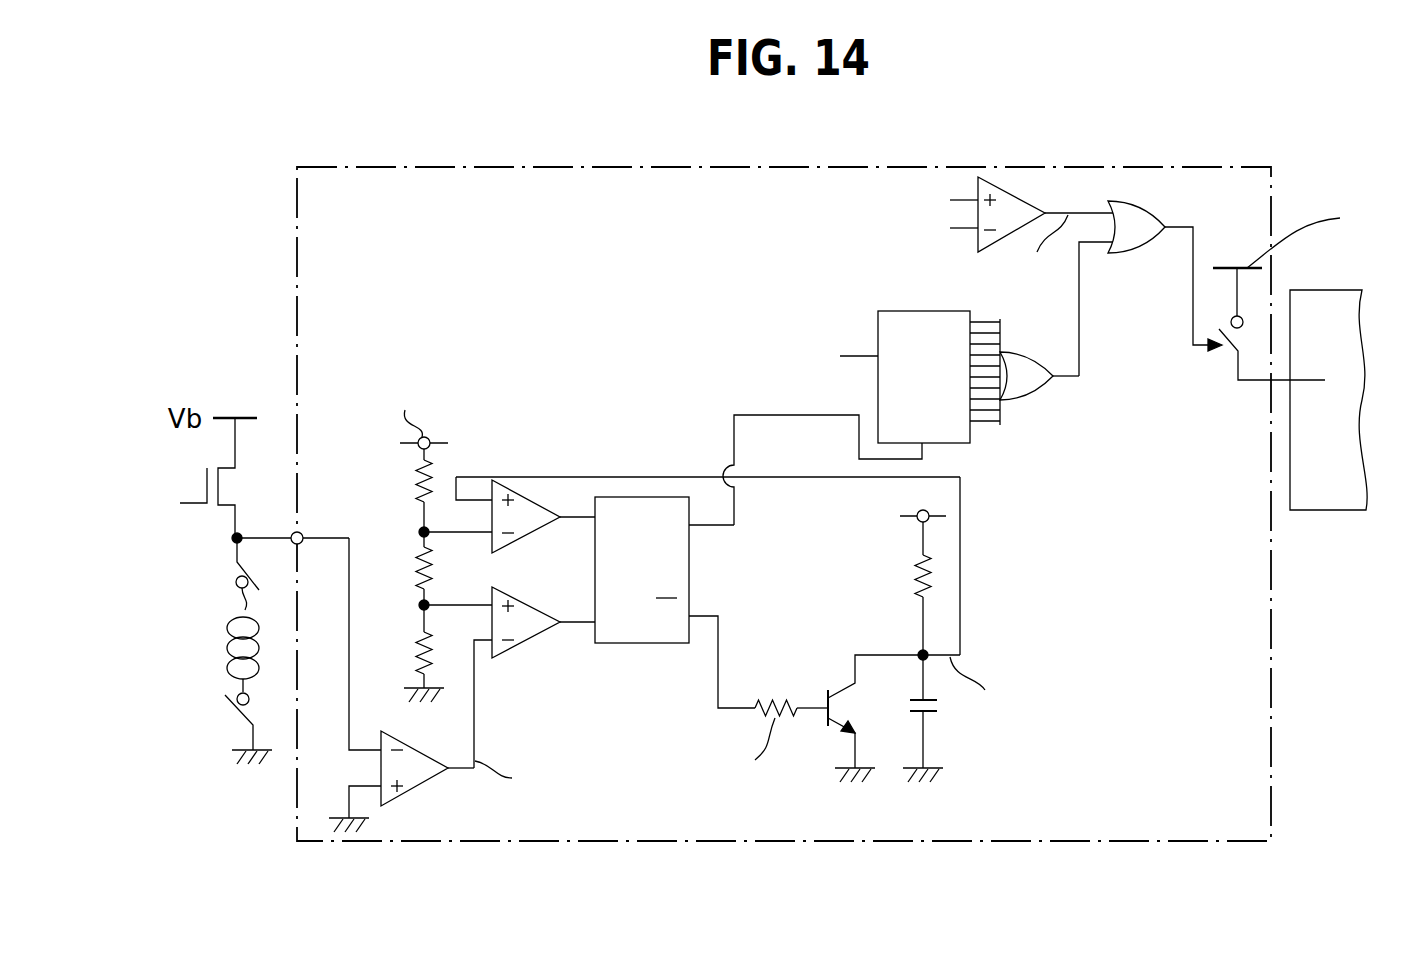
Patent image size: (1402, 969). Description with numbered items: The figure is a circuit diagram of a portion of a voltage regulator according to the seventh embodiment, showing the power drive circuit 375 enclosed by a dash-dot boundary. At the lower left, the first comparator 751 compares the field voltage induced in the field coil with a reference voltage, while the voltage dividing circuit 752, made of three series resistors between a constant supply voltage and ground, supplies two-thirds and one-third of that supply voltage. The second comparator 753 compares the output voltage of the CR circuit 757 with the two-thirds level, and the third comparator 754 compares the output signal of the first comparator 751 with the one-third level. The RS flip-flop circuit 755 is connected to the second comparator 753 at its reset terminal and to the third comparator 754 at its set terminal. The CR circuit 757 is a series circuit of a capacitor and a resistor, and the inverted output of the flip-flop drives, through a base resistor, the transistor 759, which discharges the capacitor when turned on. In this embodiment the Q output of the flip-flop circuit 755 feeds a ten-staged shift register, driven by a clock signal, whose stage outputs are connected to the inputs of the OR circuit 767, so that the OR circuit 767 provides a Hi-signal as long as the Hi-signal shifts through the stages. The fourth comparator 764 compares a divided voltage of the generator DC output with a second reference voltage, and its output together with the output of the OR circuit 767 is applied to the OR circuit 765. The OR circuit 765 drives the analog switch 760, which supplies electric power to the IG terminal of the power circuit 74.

The first comparator 751 is at (413, 790).
The voltage dividing circuit 752 is at (413, 648).
The second comparator 753 is at (525, 505).
The third comparator 754 is at (535, 660).
The RS flip-flop circuit 755 is at (634, 643).
The CR circuit 757 is at (948, 732).
The transistor 759 is at (838, 742).
The analog switch 760 is at (1230, 350).
The fourth comparator 764 is at (1027, 208).
The OR circuit / 10-staged shift register 765 is at (1140, 207).
The OR circuit 767 is at (1012, 398).
The power circuit 74 is at (1325, 510).
The power drive circuit 375 is at (1083, 844).